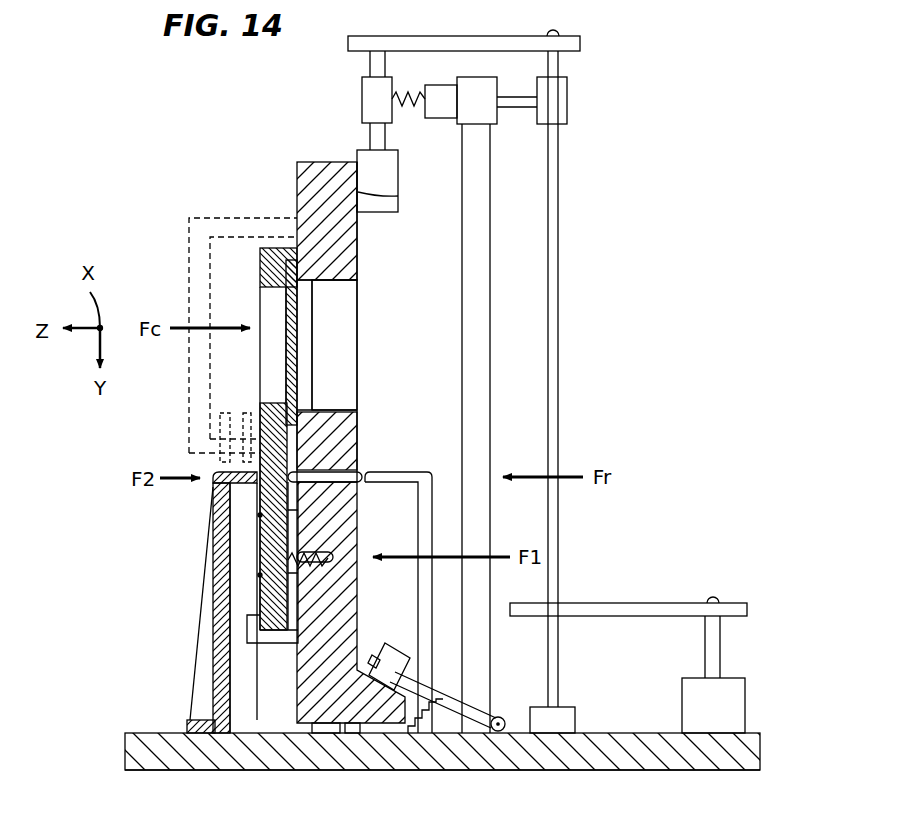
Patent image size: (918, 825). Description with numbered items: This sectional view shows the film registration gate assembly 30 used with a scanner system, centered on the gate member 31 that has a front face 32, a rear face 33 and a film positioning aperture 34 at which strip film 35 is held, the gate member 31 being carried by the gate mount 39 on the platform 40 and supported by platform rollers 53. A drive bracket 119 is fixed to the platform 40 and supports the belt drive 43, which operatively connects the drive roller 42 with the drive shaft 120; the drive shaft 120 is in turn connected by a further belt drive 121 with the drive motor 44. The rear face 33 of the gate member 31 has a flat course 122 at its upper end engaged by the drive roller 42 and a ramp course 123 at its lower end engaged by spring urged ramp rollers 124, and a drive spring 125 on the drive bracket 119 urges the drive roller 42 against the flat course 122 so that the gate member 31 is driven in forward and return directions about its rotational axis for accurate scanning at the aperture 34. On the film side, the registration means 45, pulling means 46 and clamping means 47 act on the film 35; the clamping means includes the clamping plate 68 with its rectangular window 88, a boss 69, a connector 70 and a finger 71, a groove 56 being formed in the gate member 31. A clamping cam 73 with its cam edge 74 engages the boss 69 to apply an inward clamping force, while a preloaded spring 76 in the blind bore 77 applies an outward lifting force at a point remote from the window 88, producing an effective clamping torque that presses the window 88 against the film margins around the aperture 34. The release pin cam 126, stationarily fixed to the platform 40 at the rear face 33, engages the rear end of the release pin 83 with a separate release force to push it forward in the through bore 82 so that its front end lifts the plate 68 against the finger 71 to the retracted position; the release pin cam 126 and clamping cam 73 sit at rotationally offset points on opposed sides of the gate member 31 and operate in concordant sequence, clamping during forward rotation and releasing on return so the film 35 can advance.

The film registration gate assembly 30 is at (155, 141).
The gate member 31 is at (328, 162).
The front face 32 is at (297, 175).
The rear face 33 is at (357, 232).
The aperture 34 is at (343, 304).
The strip film 35 is at (293, 343).
The gate mount 39 is at (762, 750).
The platform 40 is at (555, 770).
The drive roller 42 is at (398, 170).
The belt drive 43 is at (400, 36).
The drive motor 44 is at (745, 697).
The registration means 45 is at (189, 218).
The pulling means 46 is at (247, 410).
The clamping means 47 is at (263, 600).
The platform rollers 53 is at (320, 740).
The groove 56 is at (320, 368).
The clamping plate 68 is at (215, 630).
The boss 69 is at (262, 500).
The connector 70 is at (297, 540).
The finger 71 is at (275, 648).
The clamping cam 73 is at (230, 727).
The cam edge 74 is at (245, 478).
The spring 76 is at (320, 548).
The bore 77 is at (333, 563).
The through bore 82 is at (340, 468).
The release pin 83 is at (352, 478).
The rectangular window 88 is at (260, 305).
The drive bracket 119 is at (483, 77).
The drive shaft 120 is at (560, 165).
The belt drive 121 is at (622, 600).
The flat course 122 is at (398, 196).
The ramp course 123 is at (362, 727).
The ramp rollers 124 is at (393, 657).
The drive spring 125 is at (405, 95).
The release pin cam 126 is at (410, 470).